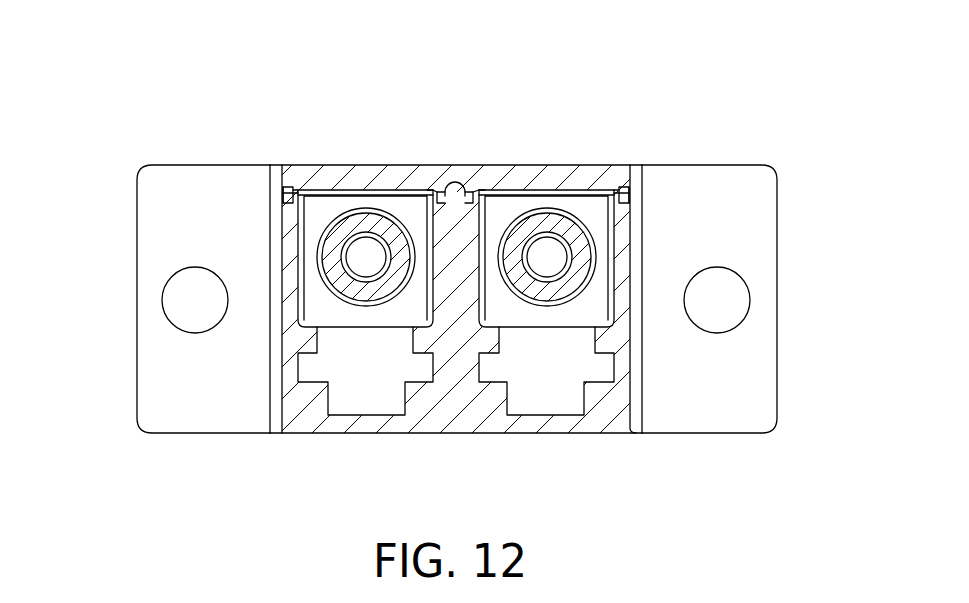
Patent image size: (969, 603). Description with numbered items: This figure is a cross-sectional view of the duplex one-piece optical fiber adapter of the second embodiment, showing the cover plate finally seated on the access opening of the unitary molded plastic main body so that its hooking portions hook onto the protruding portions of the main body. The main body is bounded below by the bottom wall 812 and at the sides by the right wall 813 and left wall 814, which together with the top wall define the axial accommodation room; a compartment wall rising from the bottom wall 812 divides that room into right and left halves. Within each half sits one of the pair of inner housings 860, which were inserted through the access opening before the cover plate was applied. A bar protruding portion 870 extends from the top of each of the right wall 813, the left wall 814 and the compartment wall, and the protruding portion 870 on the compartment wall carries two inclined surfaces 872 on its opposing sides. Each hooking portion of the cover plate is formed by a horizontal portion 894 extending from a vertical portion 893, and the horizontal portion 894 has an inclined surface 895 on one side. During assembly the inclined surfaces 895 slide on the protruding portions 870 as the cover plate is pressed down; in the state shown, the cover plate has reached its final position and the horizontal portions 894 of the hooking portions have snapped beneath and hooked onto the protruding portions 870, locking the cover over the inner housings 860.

The bottom wall 812 is at (480, 418).
The right wall 813 is at (623, 371).
The left wall 814 is at (292, 362).
The inner housing 860 is at (495, 315).
The protruding portion 870 is at (289, 191).
The inclined surface 872 is at (441, 193).
The vertical portion 893 is at (280, 196).
The horizontal portion 894 is at (278, 202).
The inclined surface 895 is at (279, 196).